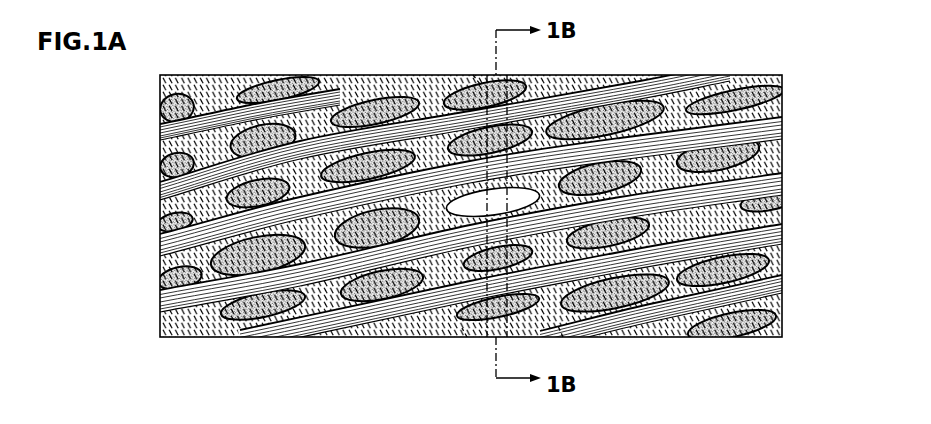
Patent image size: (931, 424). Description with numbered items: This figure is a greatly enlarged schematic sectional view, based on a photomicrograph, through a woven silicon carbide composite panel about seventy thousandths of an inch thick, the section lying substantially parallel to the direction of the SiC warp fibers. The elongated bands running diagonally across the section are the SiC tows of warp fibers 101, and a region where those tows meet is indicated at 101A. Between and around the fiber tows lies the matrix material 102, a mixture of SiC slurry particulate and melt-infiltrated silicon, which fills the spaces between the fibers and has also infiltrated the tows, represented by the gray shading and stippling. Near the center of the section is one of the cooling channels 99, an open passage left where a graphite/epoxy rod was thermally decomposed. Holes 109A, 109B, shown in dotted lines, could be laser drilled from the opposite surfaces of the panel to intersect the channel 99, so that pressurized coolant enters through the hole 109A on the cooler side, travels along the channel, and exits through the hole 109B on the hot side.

The cooling channel 99 is at (510, 211).
The SiC tows of warp fibers 101 is at (434, 86).
The channel junction 101A is at (563, 337).
The matrix material 102 is at (538, 88).
The drilled hole 109A is at (473, 75).
The drilled hole 109B is at (467, 337).